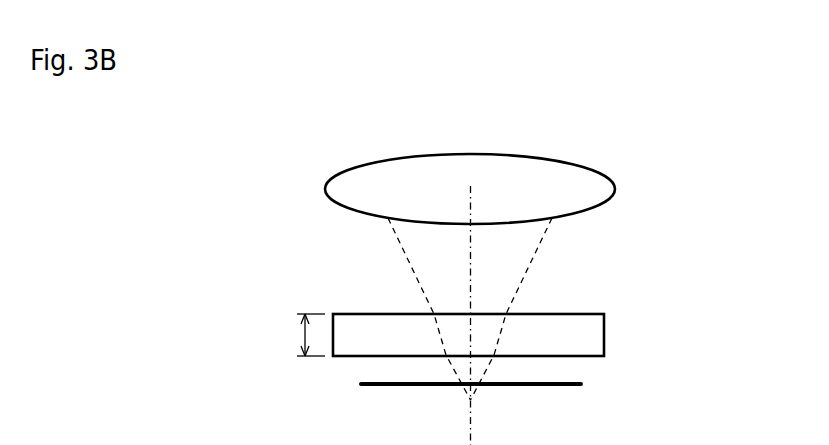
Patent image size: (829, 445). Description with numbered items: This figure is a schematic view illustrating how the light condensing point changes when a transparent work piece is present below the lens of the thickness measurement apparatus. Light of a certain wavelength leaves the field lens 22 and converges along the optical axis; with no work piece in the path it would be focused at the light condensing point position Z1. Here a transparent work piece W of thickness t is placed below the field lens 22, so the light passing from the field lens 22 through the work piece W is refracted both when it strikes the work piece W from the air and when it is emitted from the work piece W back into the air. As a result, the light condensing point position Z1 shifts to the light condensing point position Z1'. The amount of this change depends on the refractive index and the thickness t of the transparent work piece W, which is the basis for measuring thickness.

The field lens 22 is at (597, 195).
The work piece W is at (583, 336).
The thickness t is at (301, 335).
The light condensing point position Z1 is at (536, 382).
The light condensing point position Z1' is at (598, 402).